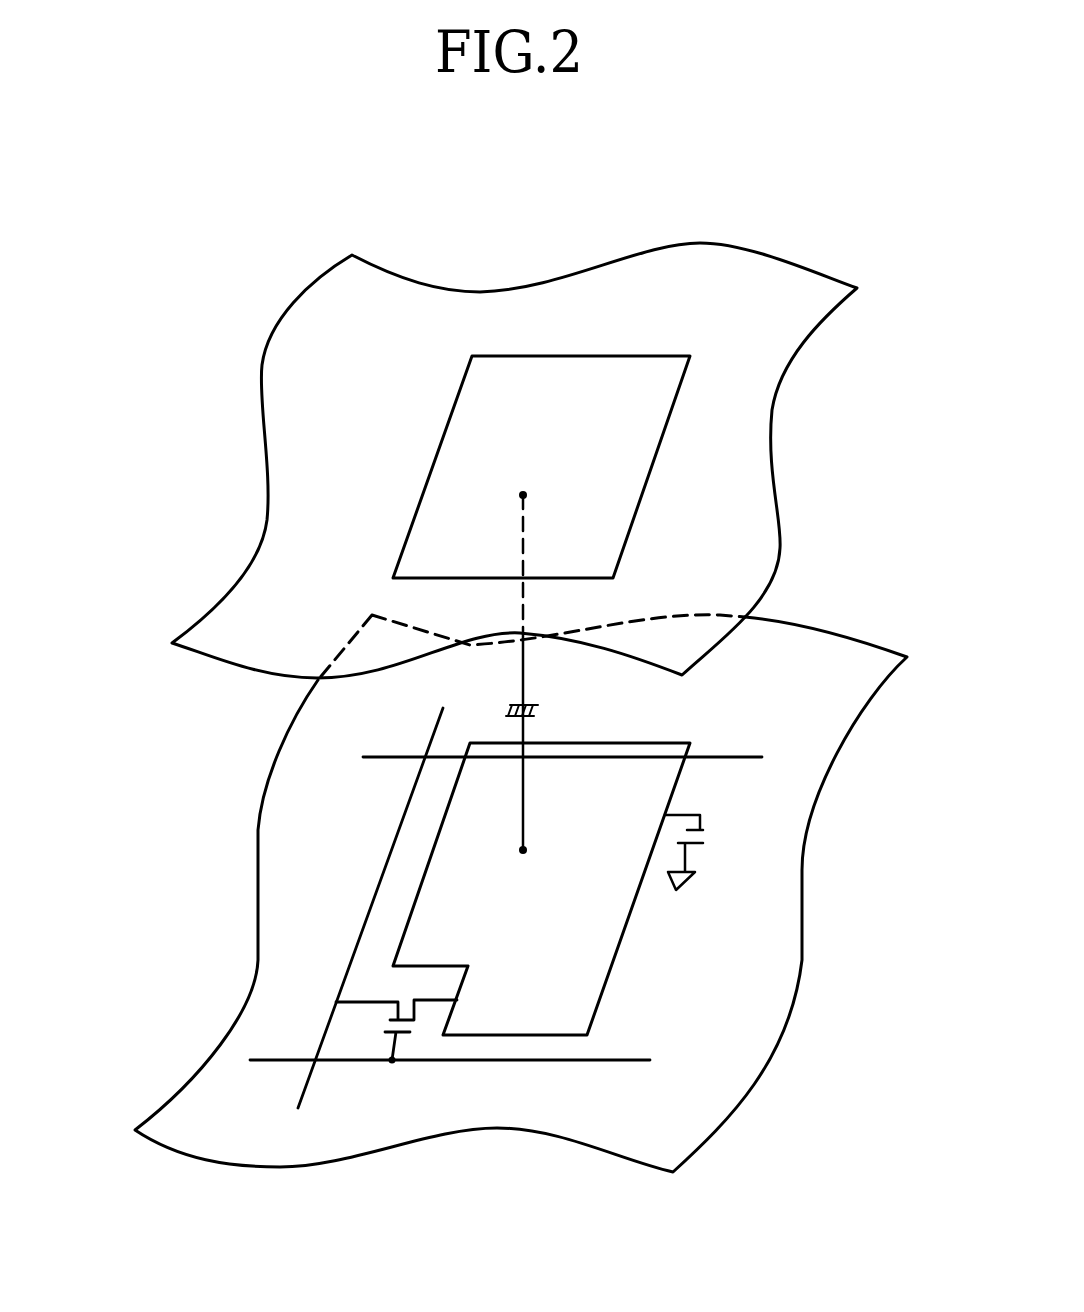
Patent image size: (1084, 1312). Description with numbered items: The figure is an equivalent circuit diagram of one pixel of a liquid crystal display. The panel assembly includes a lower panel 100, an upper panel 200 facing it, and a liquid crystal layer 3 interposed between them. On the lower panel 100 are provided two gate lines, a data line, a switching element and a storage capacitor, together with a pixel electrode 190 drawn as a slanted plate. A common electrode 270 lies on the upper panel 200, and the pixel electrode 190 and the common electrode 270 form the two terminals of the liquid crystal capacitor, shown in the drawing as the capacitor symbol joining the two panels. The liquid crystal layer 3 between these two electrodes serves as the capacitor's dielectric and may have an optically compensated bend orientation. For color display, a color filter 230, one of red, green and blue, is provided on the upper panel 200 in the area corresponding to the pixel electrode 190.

The liquid crystal layer 3 is at (164, 770).
The lower panel 100 is at (804, 866).
The pixel electrode 190 is at (612, 963).
The upper panel 200 is at (778, 495).
The color filter 230 is at (645, 485).
The common electrode 270 is at (773, 428).